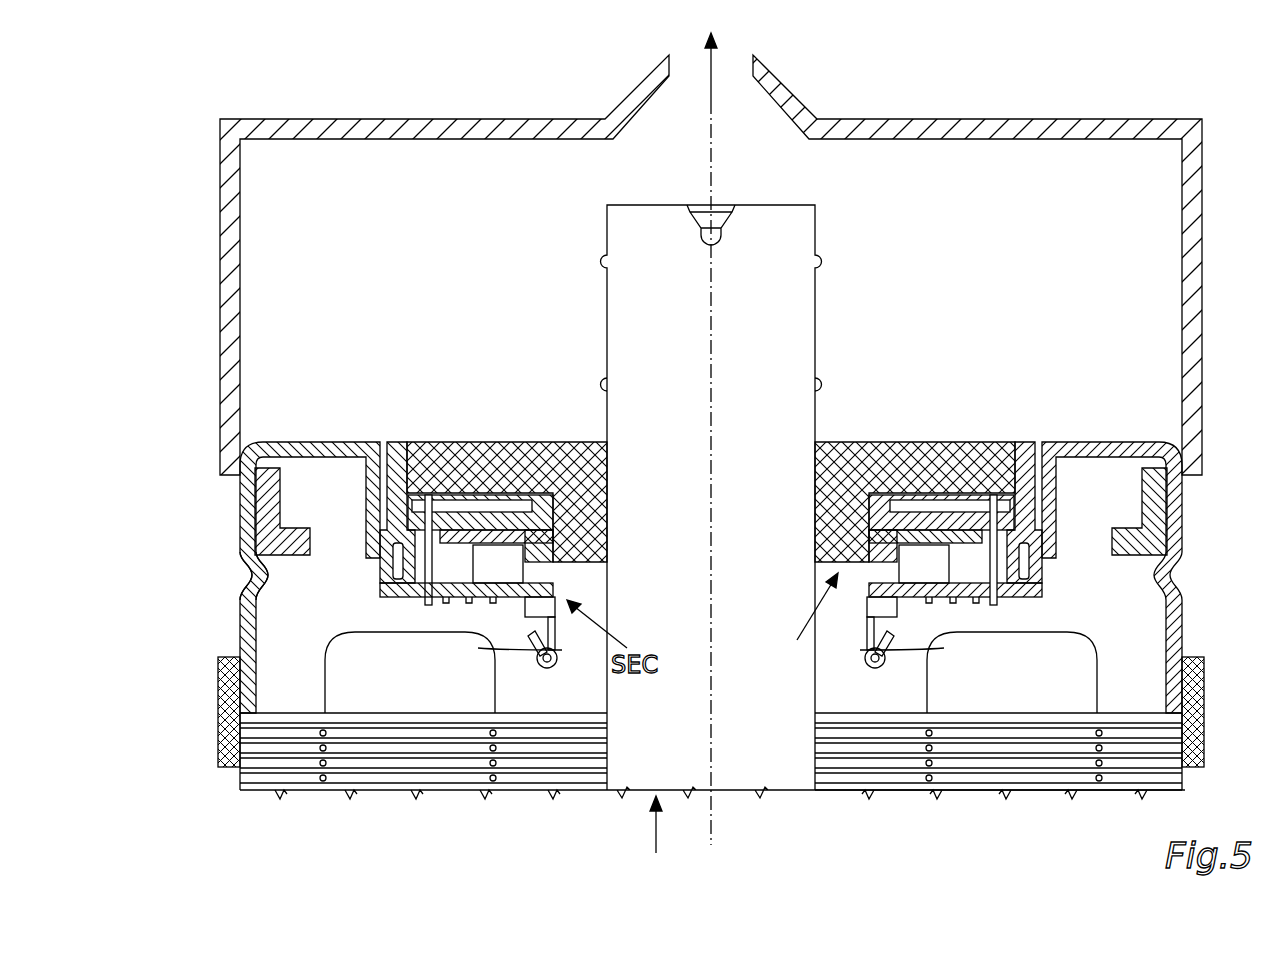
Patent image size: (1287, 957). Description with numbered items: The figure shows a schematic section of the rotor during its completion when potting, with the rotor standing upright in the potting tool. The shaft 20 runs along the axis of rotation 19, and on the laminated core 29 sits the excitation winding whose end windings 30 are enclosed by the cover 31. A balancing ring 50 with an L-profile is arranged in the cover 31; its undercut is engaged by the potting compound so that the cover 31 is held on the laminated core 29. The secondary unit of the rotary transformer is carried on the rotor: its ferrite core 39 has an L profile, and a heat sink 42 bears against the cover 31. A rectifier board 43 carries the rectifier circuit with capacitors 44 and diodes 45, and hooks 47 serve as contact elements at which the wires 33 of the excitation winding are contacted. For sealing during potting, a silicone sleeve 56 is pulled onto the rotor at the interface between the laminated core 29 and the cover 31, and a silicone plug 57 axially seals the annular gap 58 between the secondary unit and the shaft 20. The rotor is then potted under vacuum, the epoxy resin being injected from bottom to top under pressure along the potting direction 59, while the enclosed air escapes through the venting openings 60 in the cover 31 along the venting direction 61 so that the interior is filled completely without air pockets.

The axis of rotation 19 is at (713, 823).
The shaft 20 is at (661, 205).
The laminated core 29 is at (268, 743).
The end windings 30 is at (385, 675).
The cover 31 is at (247, 557).
The wires 33 is at (893, 660).
The ferrite core 39 is at (1042, 446).
The heat sink 42 is at (1042, 503).
The rectifier board 43 is at (1000, 605).
The capacitors 44 is at (437, 510).
The diodes 45 is at (968, 600).
The hooks 47 is at (868, 605).
The balancing ring 50 is at (262, 516).
The silicone sleeve 56 is at (228, 700).
The silicone plug 57 is at (907, 443).
The annular gap 58 is at (808, 624).
The potting direction 59 is at (656, 826).
The venting openings 60 is at (366, 443).
The venting direction 61 is at (713, 78).